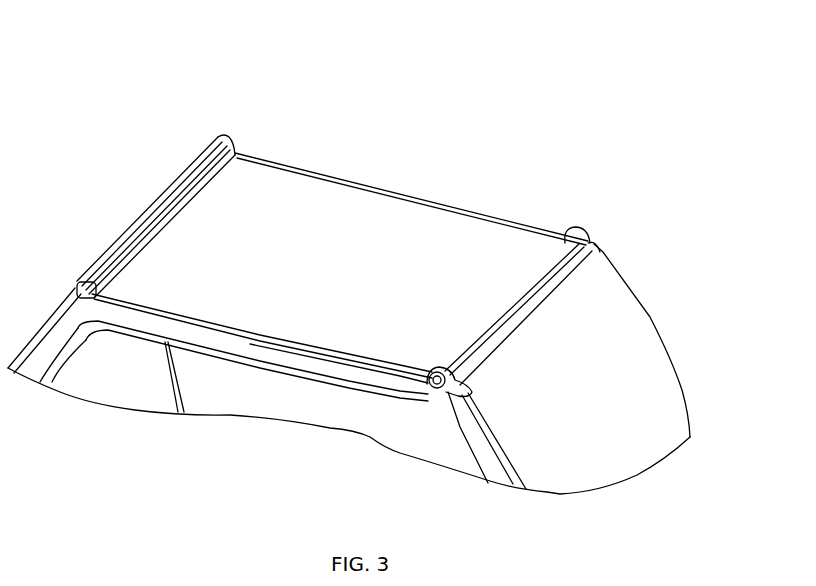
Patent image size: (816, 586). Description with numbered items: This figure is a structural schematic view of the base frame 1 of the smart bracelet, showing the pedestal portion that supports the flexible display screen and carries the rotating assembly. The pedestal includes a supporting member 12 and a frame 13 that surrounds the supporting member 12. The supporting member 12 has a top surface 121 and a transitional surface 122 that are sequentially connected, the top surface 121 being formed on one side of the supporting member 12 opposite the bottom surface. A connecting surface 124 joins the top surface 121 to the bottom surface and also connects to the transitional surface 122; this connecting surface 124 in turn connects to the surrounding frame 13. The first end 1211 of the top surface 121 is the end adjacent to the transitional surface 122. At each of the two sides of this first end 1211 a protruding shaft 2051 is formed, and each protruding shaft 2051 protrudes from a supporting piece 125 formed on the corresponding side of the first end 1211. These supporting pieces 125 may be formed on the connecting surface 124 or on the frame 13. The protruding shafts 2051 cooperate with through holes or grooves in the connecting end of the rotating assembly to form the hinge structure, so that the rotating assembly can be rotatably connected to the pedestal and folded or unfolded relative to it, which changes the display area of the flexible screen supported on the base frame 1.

The base frame 1 is at (400, 90).
The supporting member 12 is at (553, 224).
The top surface 121 is at (437, 239).
The first end of the top surface 1211 is at (577, 247).
The transitional surface 122 is at (557, 285).
The connecting surface 124 is at (357, 358).
The supporting piece 125 is at (440, 388).
The protruding shaft 2051 is at (443, 389).
The frame 13 is at (157, 325).